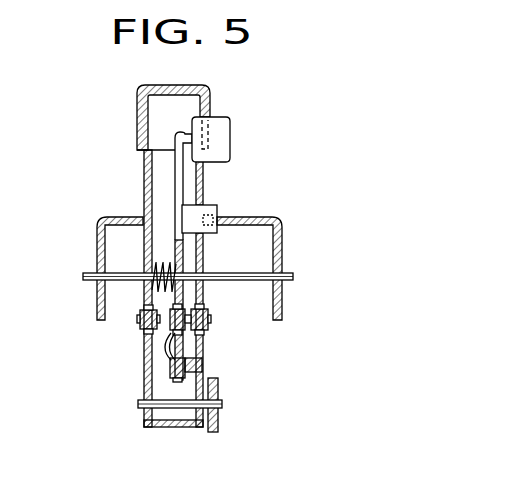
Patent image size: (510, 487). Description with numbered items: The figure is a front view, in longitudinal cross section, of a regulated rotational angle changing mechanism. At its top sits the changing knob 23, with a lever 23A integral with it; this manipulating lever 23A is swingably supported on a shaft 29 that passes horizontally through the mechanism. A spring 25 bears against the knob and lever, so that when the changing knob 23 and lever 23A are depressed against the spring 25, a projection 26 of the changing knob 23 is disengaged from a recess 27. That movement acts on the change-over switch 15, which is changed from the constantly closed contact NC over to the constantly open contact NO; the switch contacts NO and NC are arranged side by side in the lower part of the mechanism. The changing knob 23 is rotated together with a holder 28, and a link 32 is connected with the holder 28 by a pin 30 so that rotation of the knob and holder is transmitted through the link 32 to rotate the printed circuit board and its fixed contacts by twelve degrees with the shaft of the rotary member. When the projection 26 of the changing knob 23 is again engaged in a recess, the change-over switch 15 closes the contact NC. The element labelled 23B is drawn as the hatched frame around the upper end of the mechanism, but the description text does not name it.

The hook-shaped frame 23B is at (138, 93).
The changing knob 23 is at (222, 128).
The lever 23A is at (173, 158).
The holder 28 is at (143, 190).
The projection 26 is at (207, 205).
The recess 27 is at (217, 211).
The shaft 29 is at (295, 273).
The spring 25 is at (147, 290).
The constantly open contact NO is at (138, 315).
The constantly closed contact NC is at (210, 318).
The change-over switch 15 is at (168, 343).
The link 32 is at (213, 380).
The pin 30 is at (223, 403).